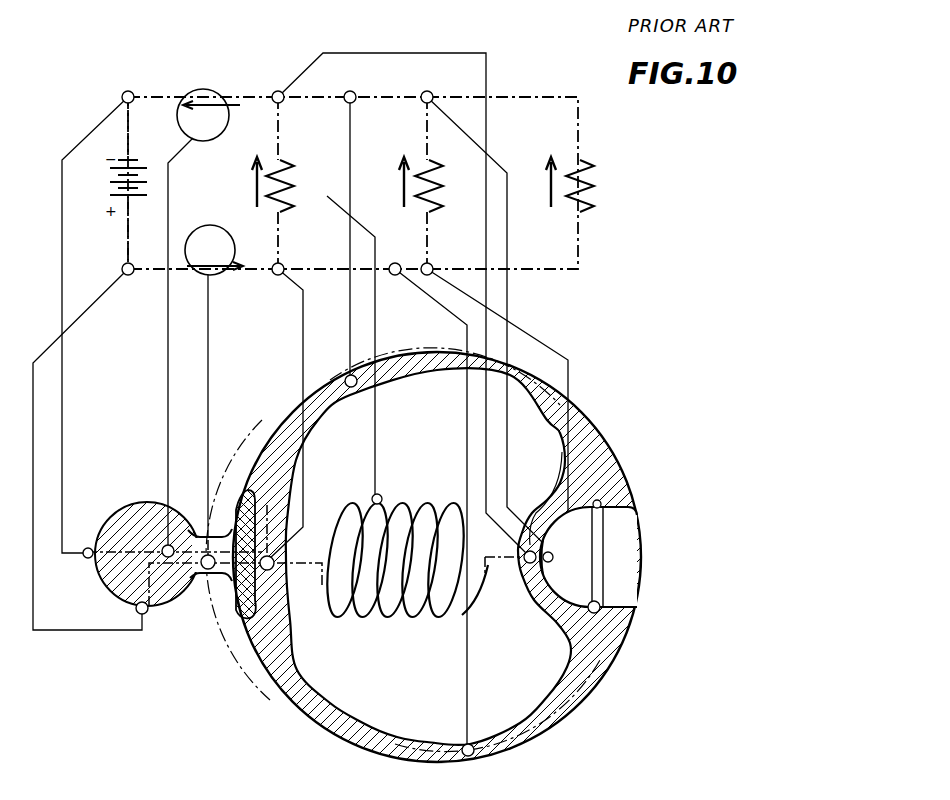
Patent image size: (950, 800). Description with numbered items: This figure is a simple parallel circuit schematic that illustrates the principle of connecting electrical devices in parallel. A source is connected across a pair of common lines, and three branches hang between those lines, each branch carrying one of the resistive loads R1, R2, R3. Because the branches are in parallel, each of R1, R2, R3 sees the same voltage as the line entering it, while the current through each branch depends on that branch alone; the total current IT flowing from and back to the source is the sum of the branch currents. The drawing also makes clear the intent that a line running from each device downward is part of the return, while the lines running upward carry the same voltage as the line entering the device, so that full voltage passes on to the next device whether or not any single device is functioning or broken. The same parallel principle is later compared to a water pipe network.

The first resistor (heater element) R1 is at (274, 184).
The second resistor R2 is at (415, 184).
The third resistor R3 is at (565, 184).
The total current ammeter IT is at (210, 182).